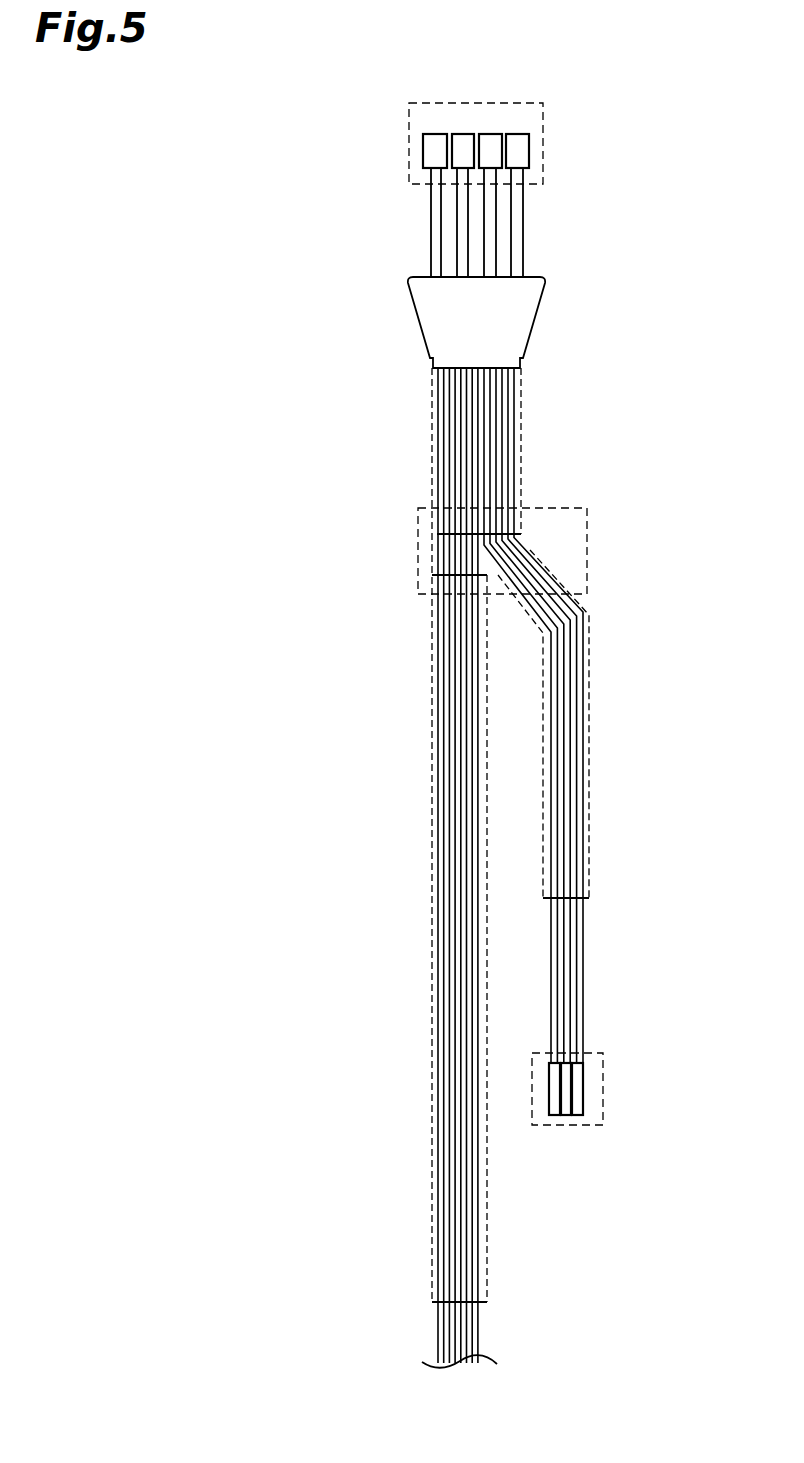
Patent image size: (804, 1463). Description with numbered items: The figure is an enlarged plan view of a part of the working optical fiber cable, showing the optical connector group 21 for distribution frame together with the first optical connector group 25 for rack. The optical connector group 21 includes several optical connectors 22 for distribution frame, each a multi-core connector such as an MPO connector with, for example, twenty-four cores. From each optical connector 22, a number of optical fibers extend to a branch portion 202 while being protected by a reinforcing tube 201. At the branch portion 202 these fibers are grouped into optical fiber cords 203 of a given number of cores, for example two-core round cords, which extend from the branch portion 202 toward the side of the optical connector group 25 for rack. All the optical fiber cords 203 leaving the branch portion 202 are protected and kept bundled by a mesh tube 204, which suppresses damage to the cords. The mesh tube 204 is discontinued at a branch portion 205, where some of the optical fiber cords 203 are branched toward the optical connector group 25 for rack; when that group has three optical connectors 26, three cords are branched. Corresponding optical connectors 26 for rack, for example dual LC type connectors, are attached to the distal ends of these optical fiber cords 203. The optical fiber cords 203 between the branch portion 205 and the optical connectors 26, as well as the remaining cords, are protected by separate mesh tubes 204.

The optical connector group for distribution frame 21 is at (543, 143).
The optical connector for distribution frame 22 is at (433, 134).
The reinforcing tube 201 is at (461, 243).
The branch portion 202 is at (526, 330).
The optical fiber cord 203 is at (485, 515).
The mesh tube 204 is at (522, 388).
The branch portion 205 is at (588, 548).
The optical connector group for rack 25 is at (604, 1088).
The optical connector for rack 26 is at (554, 1115).